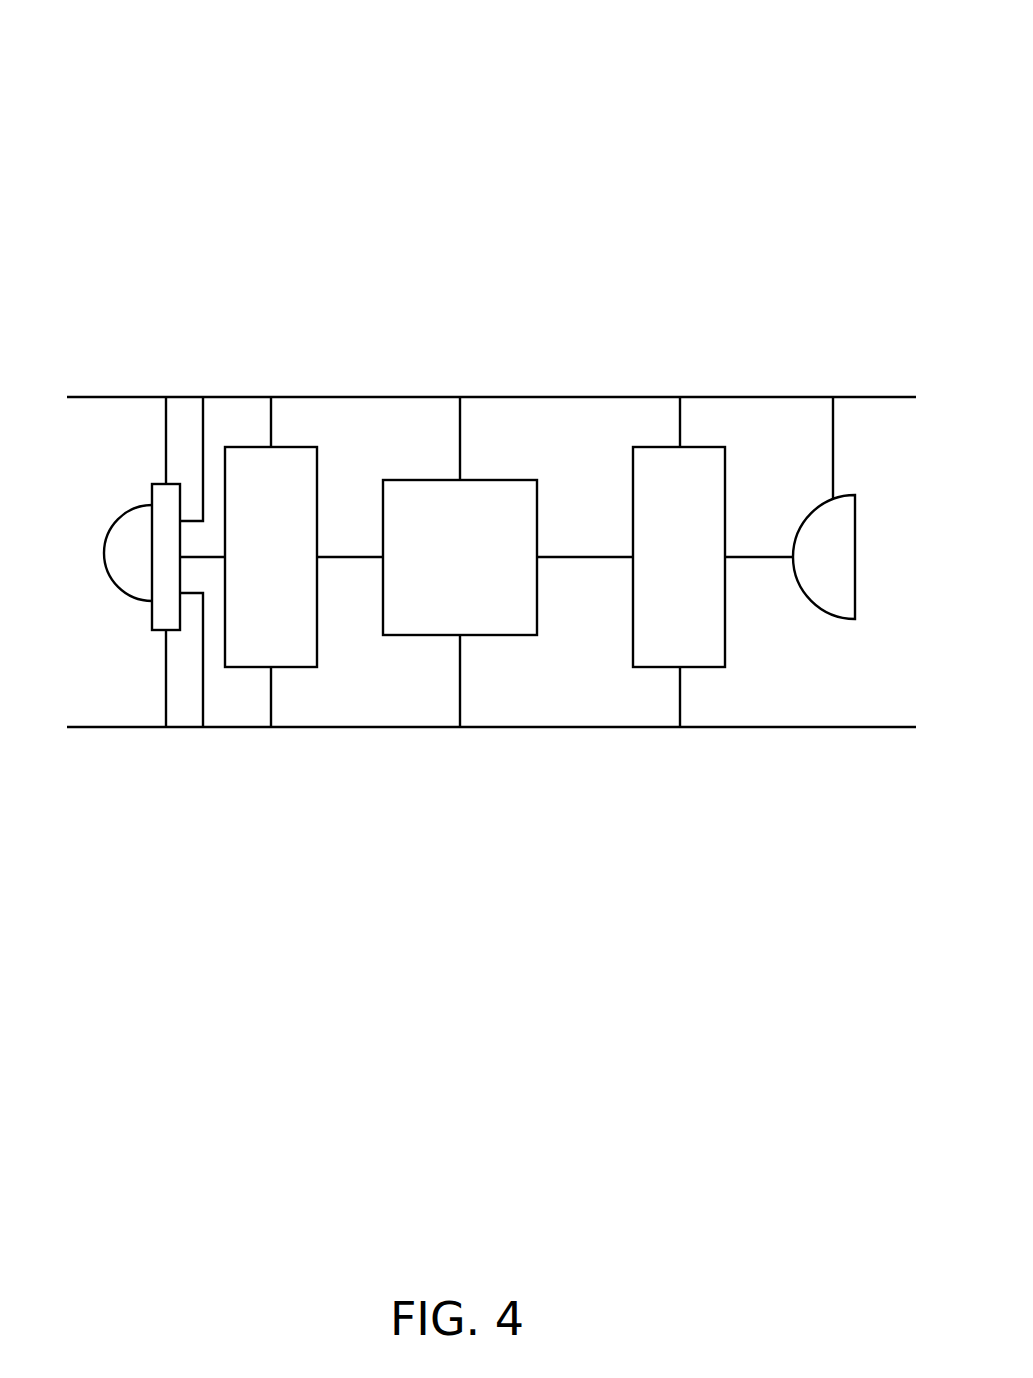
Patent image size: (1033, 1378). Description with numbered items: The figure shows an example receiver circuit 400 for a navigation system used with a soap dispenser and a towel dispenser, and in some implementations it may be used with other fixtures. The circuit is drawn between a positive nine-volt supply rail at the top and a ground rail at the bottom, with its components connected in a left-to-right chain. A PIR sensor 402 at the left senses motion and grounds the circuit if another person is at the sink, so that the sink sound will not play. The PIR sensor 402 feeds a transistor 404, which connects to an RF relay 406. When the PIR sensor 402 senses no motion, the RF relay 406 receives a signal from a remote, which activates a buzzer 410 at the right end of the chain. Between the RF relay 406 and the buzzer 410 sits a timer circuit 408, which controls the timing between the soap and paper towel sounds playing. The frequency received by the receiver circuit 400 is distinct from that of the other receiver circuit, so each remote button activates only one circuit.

The receiver circuit 400 is at (146, 70).
The PIR sensor 402 is at (164, 562).
The transistor 404 is at (304, 562).
The RF relay 406 is at (508, 562).
The timer circuit 408 is at (713, 562).
The buzzer 410 is at (824, 508).